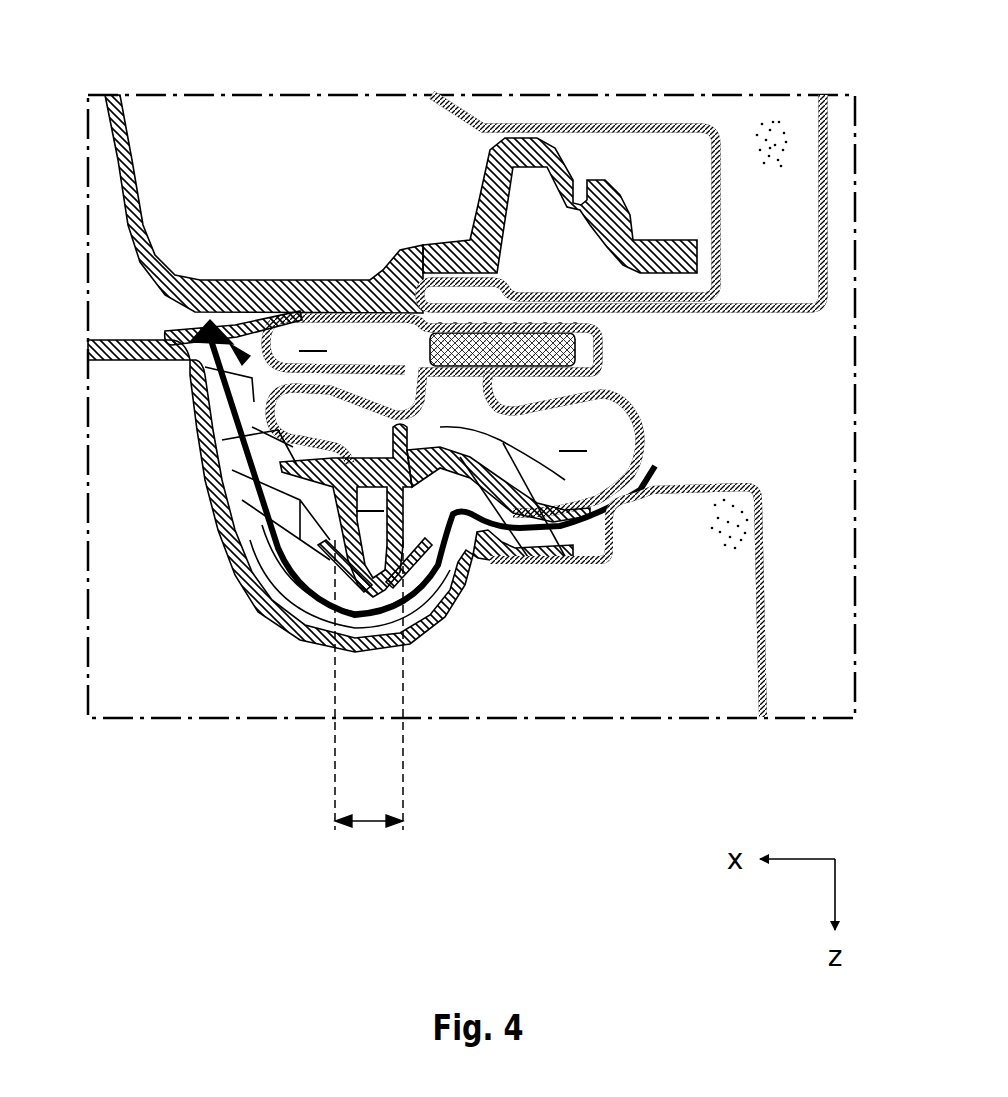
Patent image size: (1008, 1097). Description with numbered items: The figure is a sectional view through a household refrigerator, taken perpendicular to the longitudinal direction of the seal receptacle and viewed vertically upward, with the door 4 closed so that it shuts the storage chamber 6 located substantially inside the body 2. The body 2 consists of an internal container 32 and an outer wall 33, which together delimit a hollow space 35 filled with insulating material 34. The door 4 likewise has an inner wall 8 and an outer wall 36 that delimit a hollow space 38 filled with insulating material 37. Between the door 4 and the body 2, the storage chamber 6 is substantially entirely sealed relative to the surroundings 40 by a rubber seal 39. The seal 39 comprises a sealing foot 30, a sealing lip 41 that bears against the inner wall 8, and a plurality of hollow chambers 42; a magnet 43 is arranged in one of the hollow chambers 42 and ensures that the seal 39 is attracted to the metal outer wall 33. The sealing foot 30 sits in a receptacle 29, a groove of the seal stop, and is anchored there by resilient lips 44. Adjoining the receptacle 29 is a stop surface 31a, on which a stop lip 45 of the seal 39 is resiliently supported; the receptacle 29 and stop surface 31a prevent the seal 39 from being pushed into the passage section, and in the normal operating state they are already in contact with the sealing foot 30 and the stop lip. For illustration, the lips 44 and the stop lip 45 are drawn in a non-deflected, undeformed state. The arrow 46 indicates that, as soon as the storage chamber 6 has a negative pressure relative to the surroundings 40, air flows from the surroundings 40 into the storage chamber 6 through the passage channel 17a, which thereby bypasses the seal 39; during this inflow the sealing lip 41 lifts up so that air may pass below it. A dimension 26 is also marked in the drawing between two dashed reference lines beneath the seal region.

The body 2 is at (838, 100).
The door 4 is at (778, 566).
The storage chamber 6 is at (105, 295).
The inner wall 8 is at (190, 397).
The passage channel 17a is at (370, 650).
The offset distance 26 is at (362, 826).
The receptacle 29 is at (470, 588).
The sealing foot 30 is at (440, 605).
The stop surface 31a is at (272, 430).
The internal container 32 is at (128, 148).
The outer wall 33 is at (820, 118).
The insulating material 34 is at (758, 125).
The hollow space 35 is at (756, 211).
The outer wall 36 is at (742, 484).
The insulating material 37 is at (735, 520).
The hollow space 38 is at (703, 662).
The seal 39 is at (374, 366).
The surroundings 40 is at (783, 379).
The sealing lip 41 is at (242, 326).
The hollow chambers 42 is at (577, 350).
The magnet 43 is at (523, 332).
The resilient lips 44 is at (455, 560).
The stop lip 45 is at (270, 475).
The arrow 46 is at (262, 575).